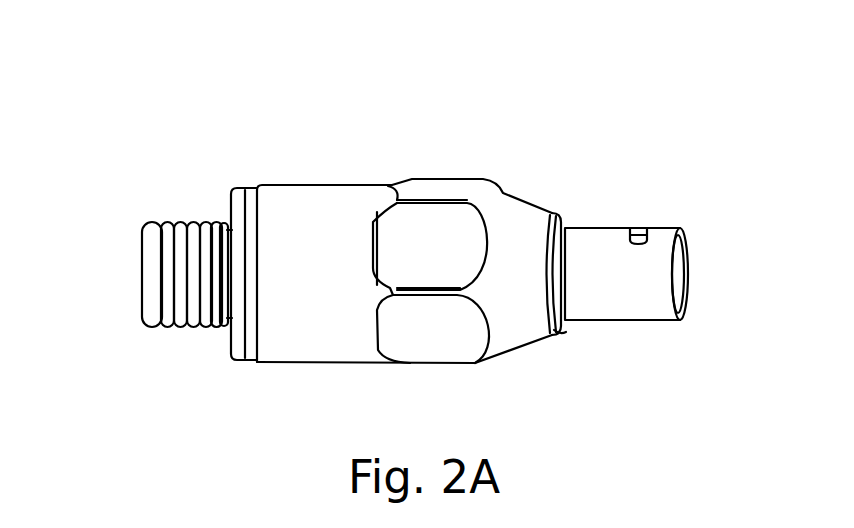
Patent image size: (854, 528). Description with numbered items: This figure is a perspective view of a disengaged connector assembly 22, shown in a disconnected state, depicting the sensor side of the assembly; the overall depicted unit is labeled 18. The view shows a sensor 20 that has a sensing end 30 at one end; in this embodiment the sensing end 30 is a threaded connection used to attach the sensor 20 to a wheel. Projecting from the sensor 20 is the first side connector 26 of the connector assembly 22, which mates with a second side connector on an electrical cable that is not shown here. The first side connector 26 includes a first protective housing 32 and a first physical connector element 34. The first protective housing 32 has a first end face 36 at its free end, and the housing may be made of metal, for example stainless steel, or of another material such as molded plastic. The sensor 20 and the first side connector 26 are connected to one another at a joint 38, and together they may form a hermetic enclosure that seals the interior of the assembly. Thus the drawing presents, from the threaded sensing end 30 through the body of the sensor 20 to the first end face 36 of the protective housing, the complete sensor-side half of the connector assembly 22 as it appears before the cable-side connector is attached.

The connector assembly 18 is at (130, 108).
The sensor 20 is at (350, 187).
The connector assembly 22 is at (614, 226).
The first side connector 26 is at (660, 319).
The sensing end 30 is at (188, 222).
The first protective housing 32 is at (615, 319).
The first physical connector element 34 is at (643, 227).
The first end face 36 is at (684, 271).
The joint 38 is at (567, 324).